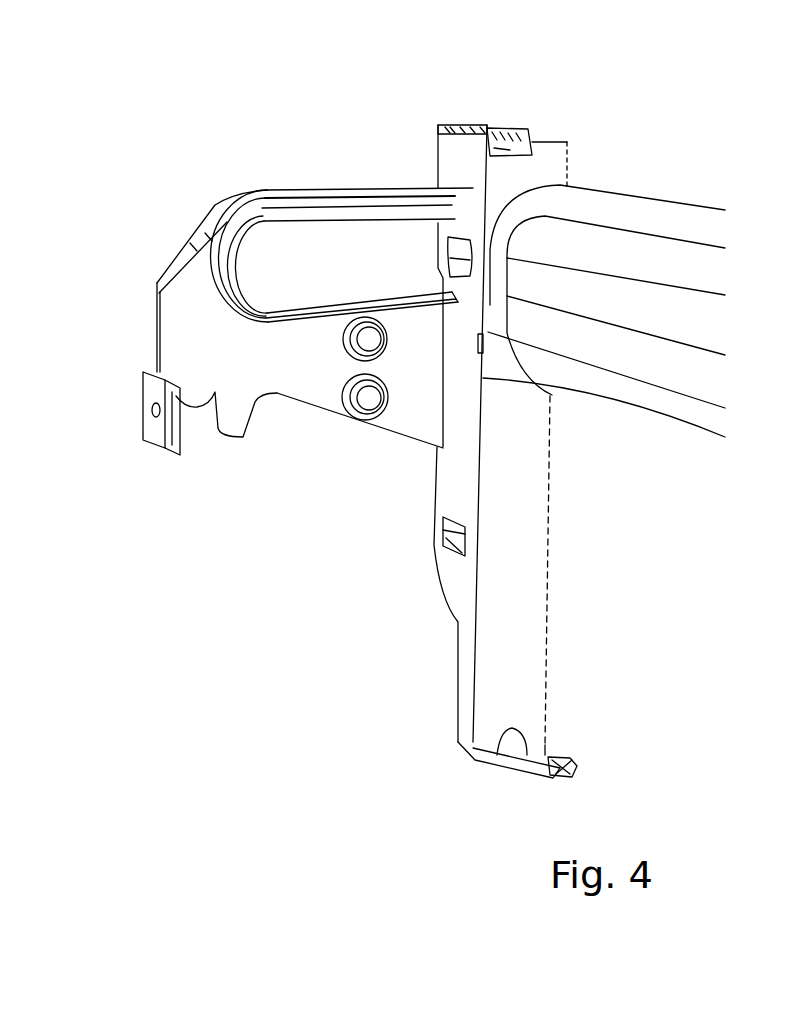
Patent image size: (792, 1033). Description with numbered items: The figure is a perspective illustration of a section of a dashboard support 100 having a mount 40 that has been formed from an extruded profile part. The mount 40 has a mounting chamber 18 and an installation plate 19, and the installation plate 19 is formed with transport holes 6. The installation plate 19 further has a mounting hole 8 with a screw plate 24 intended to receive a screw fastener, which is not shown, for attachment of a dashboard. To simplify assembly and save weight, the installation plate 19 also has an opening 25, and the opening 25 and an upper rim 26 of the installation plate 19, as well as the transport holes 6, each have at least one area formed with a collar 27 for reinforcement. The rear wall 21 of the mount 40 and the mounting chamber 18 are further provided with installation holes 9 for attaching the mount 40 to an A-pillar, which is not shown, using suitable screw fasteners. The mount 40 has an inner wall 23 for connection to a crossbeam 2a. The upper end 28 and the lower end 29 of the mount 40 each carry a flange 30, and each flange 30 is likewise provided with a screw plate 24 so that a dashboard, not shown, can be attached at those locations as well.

The dashboard support 100 is at (299, 112).
The crossbeam 2a is at (676, 253).
The transport holes 6 is at (362, 403).
The mounting hole 8 is at (150, 416).
The installation holes 9 is at (460, 248).
The mounting chamber 18 is at (404, 433).
The installation plate 19 is at (277, 394).
The rear wall 21 is at (444, 360).
The inner wall 23 is at (520, 172).
The screw plate 24 is at (502, 135).
The opening 25 is at (370, 283).
The upper rim 26 is at (222, 165).
The collar 27 is at (210, 241).
The upper end 28 is at (614, 159).
The lower end 29 is at (624, 746).
The flange 30 is at (502, 763).
The mount 40 is at (457, 427).